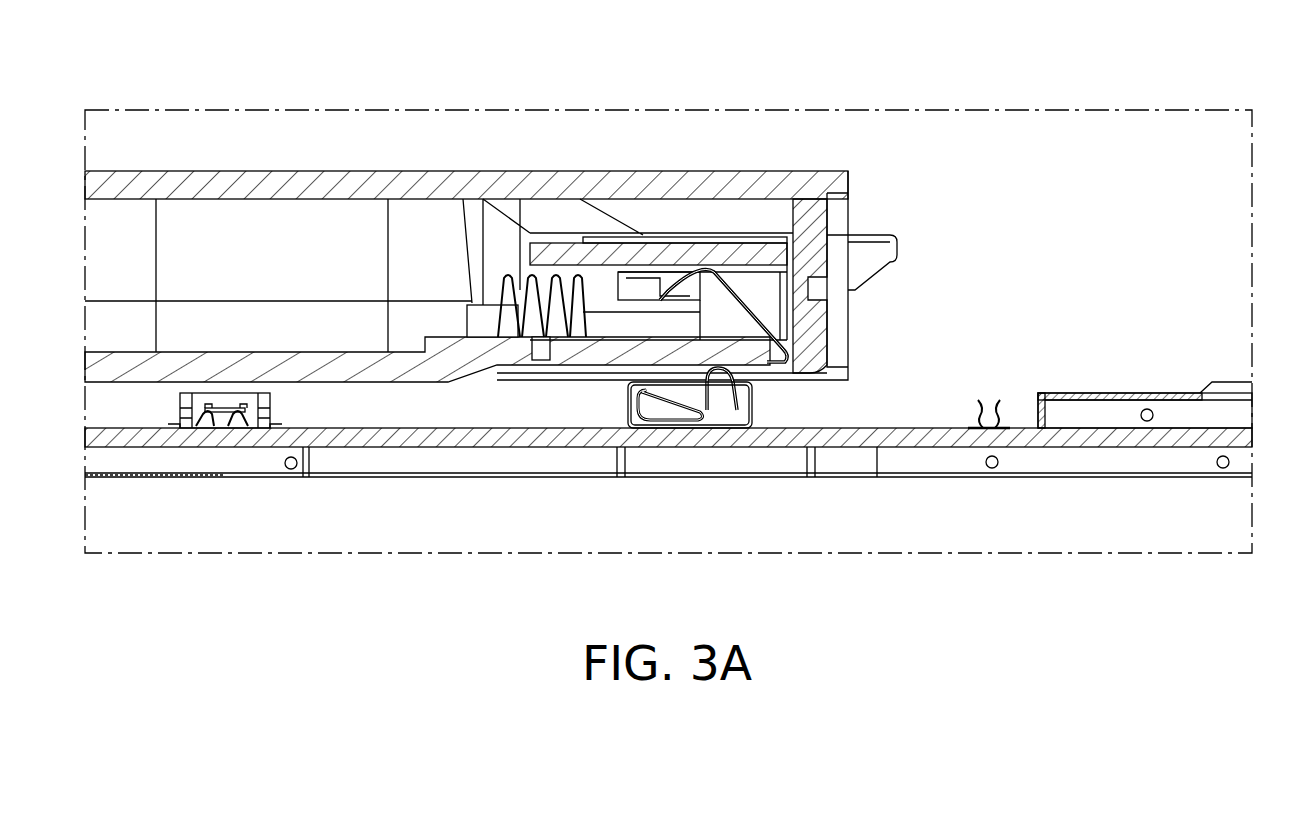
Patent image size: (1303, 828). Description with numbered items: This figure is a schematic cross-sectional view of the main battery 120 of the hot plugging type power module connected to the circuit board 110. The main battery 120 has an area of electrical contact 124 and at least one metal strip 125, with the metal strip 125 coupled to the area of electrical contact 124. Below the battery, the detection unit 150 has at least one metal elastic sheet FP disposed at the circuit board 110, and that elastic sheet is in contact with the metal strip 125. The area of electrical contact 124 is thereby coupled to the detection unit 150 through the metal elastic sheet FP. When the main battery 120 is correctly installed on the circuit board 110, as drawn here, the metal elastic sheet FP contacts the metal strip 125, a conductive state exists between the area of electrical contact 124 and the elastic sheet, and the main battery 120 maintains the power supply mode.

The circuit board 110 is at (913, 437).
The main battery 120 is at (254, 184).
The area of electrical contact 124 is at (699, 253).
The metal strip 125 is at (763, 300).
The detection unit 150 is at (740, 448).